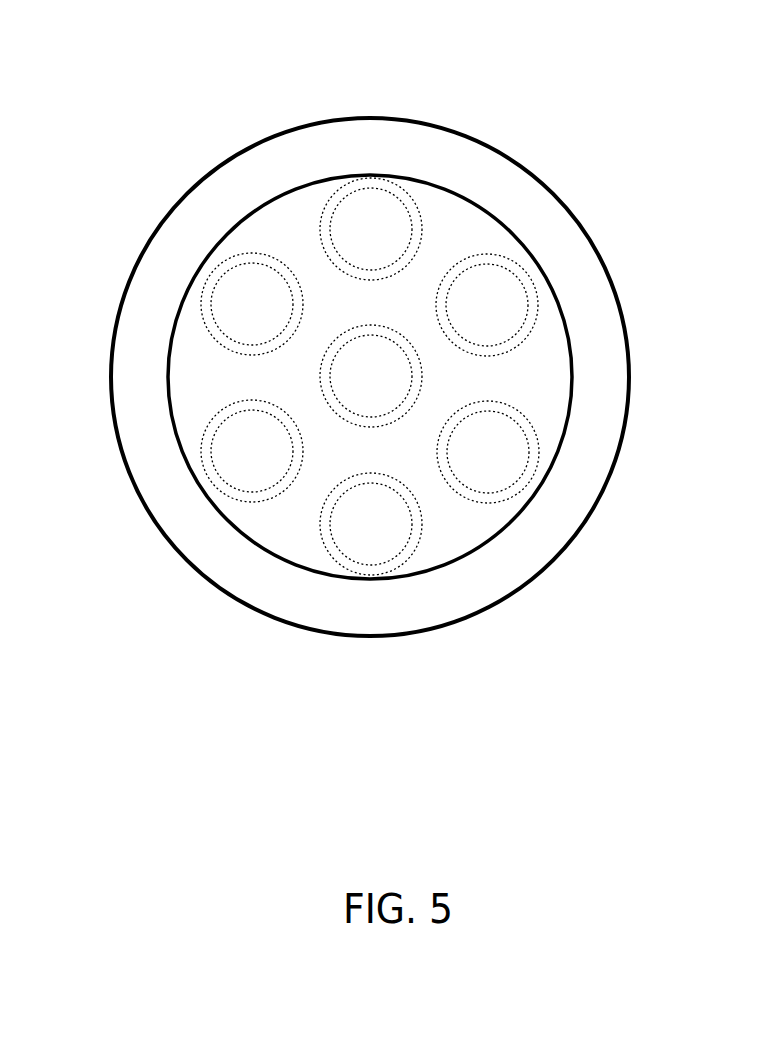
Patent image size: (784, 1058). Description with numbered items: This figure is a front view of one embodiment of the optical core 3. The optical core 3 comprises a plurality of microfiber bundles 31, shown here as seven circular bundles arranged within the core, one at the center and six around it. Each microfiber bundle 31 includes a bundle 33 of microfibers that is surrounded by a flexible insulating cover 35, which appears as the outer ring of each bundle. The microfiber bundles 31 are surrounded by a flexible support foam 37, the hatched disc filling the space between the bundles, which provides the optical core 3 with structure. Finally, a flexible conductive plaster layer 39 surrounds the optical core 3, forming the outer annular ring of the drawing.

The optical core 3 is at (660, 84).
The microfiber bundle 31 is at (480, 368).
The bundle of microfibers 33 is at (487, 305).
The flexible insulating cover 35 is at (503, 257).
The flexible support foam 37 is at (462, 523).
The flexible conductive plaster layer 39 is at (368, 138).